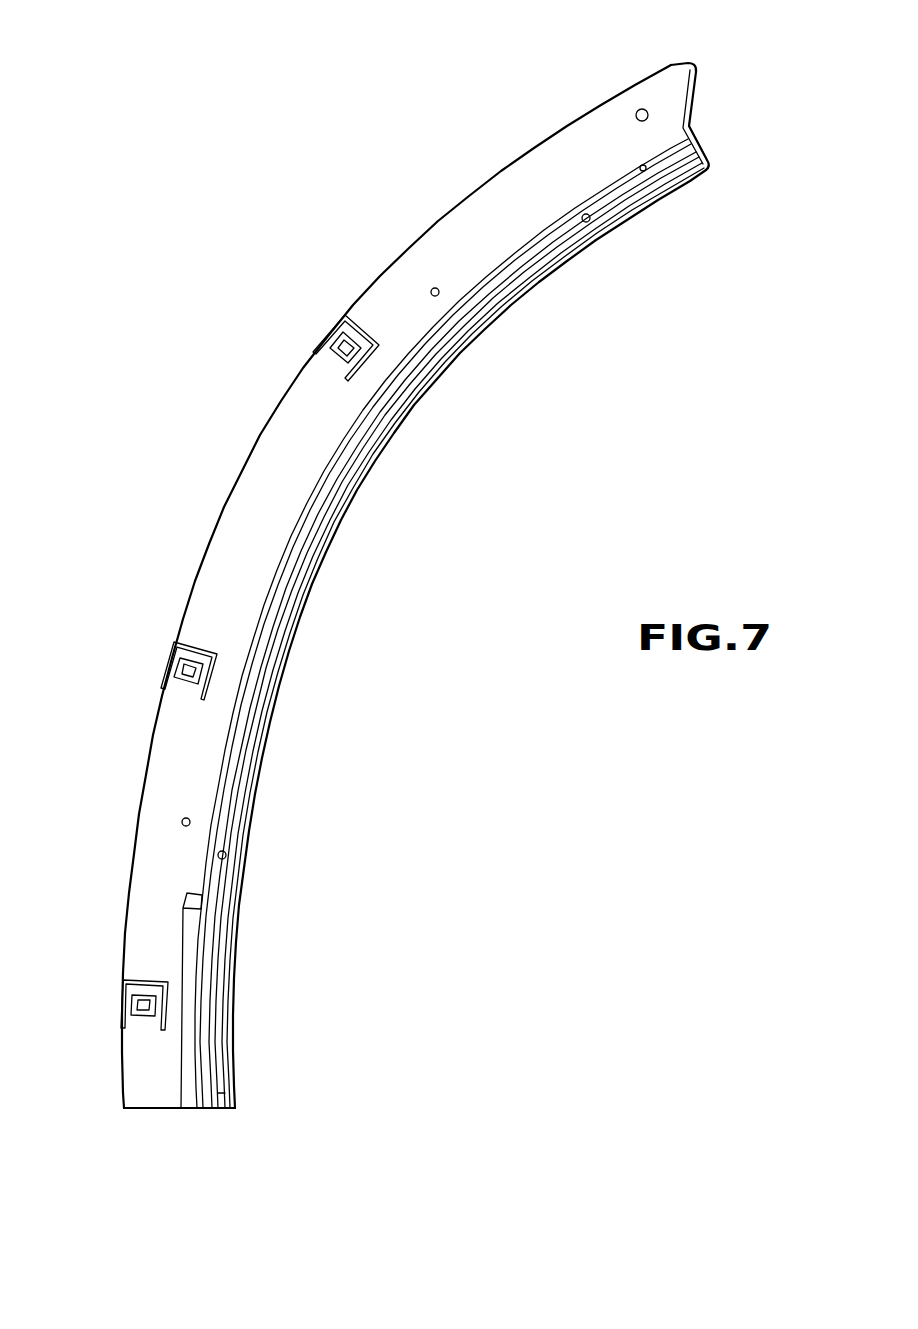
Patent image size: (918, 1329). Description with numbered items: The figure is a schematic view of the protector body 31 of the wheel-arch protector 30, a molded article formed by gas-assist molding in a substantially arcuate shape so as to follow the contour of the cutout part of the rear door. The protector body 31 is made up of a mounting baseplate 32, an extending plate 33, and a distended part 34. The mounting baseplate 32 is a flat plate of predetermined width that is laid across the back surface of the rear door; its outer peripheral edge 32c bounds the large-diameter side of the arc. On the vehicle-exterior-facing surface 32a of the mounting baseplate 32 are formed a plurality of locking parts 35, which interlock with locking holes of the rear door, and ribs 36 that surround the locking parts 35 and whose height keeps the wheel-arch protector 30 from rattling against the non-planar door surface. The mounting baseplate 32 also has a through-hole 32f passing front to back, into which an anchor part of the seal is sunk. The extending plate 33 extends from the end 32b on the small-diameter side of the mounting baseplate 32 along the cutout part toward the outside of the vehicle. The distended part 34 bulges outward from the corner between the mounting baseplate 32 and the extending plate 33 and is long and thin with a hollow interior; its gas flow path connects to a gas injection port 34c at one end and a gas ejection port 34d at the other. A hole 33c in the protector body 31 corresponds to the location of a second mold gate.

The wheel-arch protector 30 is at (263, 122).
The protector body 31 is at (715, 285).
The mounting baseplate 32 is at (618, 138).
The vehicle-exterior-facing surface 32a is at (279, 476).
The end 32b is at (268, 575).
The outer peripheral edge 32c is at (218, 508).
The through-hole 32f is at (431, 289).
The extending plate 33 is at (572, 232).
The hole 33c is at (584, 212).
The distended part 34 is at (485, 277).
The gas injection port 34c is at (200, 1110).
The gas ejection port 34d is at (672, 173).
The locking parts 35 is at (340, 360).
The ribs 36 is at (356, 318).